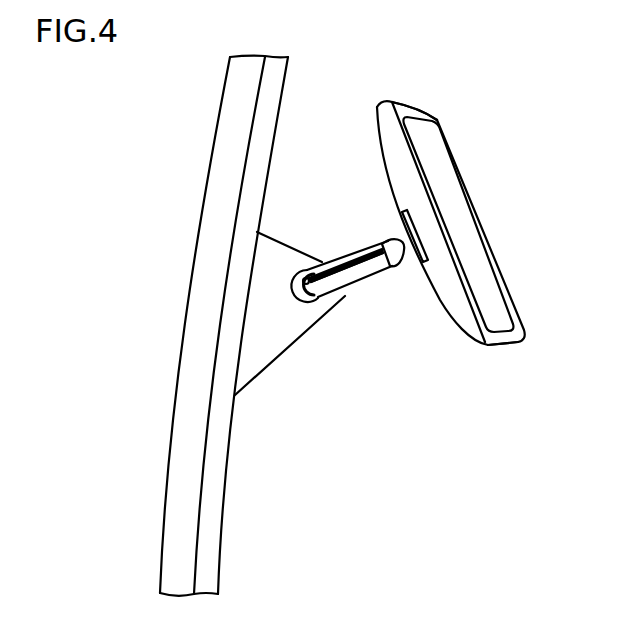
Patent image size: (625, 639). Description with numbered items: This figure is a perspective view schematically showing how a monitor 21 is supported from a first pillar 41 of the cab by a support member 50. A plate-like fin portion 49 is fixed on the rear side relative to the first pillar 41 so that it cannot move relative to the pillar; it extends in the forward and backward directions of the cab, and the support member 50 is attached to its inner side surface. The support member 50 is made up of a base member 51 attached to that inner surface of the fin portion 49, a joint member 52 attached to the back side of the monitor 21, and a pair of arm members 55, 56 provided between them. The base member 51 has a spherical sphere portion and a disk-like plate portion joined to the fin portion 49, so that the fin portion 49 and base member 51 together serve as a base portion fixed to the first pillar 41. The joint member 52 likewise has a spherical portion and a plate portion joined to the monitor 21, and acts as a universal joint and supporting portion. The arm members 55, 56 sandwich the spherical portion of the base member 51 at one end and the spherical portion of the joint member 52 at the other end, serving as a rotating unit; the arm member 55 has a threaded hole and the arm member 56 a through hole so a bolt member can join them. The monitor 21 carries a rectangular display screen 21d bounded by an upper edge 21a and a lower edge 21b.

The first pillar 41 is at (227, 135).
The fin portion 49 is at (275, 262).
The support member 50 is at (357, 286).
The arm member 55 is at (360, 250).
The arm member 56 is at (355, 272).
The base member 51 is at (292, 293).
The joint member 52 is at (407, 260).
The monitor 21 is at (459, 231).
The upper edge 21a is at (422, 120).
The lower edge 21b is at (507, 330).
The display screen 21d is at (455, 205).